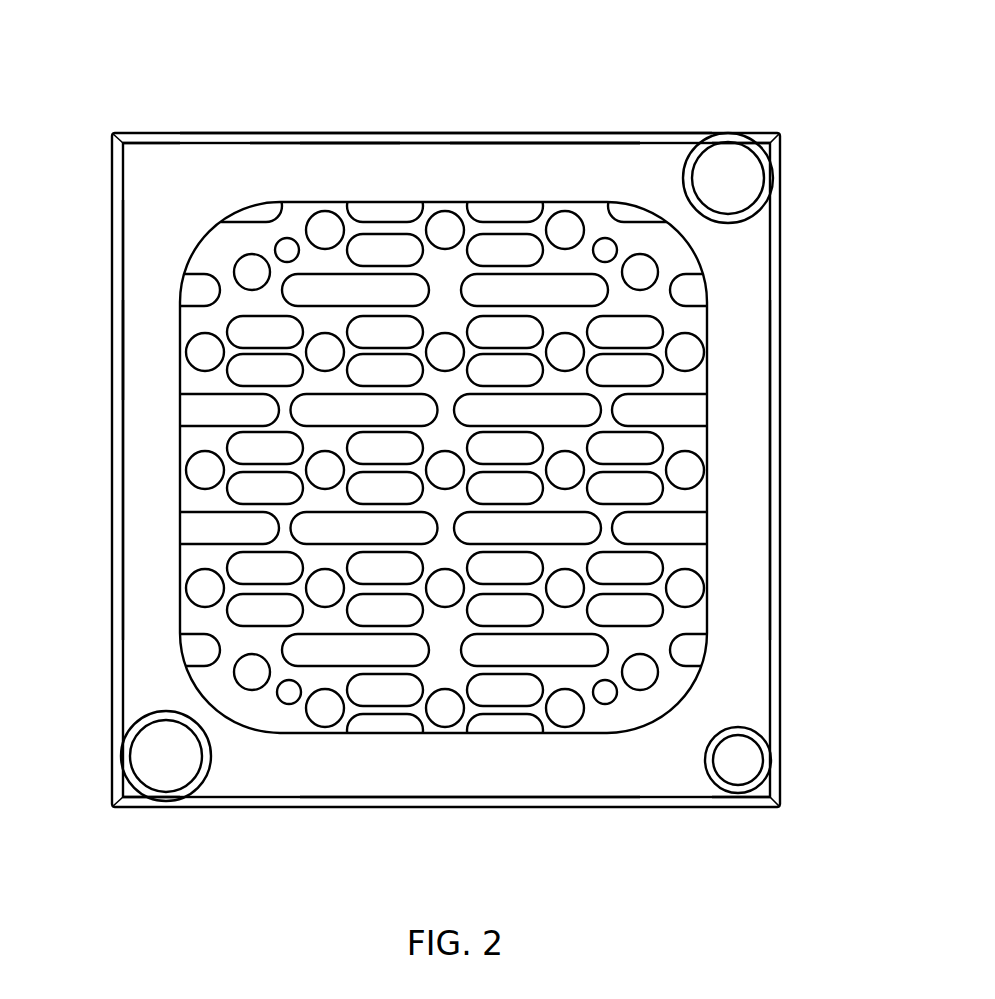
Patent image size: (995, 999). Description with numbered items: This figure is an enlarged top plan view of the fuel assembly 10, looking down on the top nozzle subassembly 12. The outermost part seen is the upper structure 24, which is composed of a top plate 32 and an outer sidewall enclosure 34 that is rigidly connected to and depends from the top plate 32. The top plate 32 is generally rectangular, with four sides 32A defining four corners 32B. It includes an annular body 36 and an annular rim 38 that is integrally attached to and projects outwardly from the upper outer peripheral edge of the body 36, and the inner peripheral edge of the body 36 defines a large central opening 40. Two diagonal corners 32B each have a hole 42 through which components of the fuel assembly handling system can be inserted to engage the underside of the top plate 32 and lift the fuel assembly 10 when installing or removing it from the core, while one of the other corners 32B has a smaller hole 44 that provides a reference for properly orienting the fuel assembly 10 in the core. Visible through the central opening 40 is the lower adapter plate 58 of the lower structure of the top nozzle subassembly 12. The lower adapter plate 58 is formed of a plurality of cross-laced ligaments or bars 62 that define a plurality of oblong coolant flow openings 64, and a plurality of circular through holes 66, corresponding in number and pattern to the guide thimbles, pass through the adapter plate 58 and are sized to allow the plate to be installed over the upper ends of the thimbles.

The fuel assembly 10 is at (722, 76).
The top nozzle subassembly 12 is at (342, 124).
The upper structure 24 is at (786, 342).
The top plate 32 is at (235, 165).
The sides 32A is at (455, 150).
The corners 32B is at (152, 162).
The outer sidewall enclosure 34 is at (532, 137).
The annular body 36 is at (313, 160).
The annular rim 38 is at (120, 297).
The central opening 40 is at (187, 503).
The hole 42 is at (764, 197).
The hole 44 is at (750, 788).
The lower adapter plate 58 is at (447, 463).
The ligaments 62 is at (255, 422).
The coolant flow openings 64 is at (298, 647).
The through holes 66 is at (453, 341).